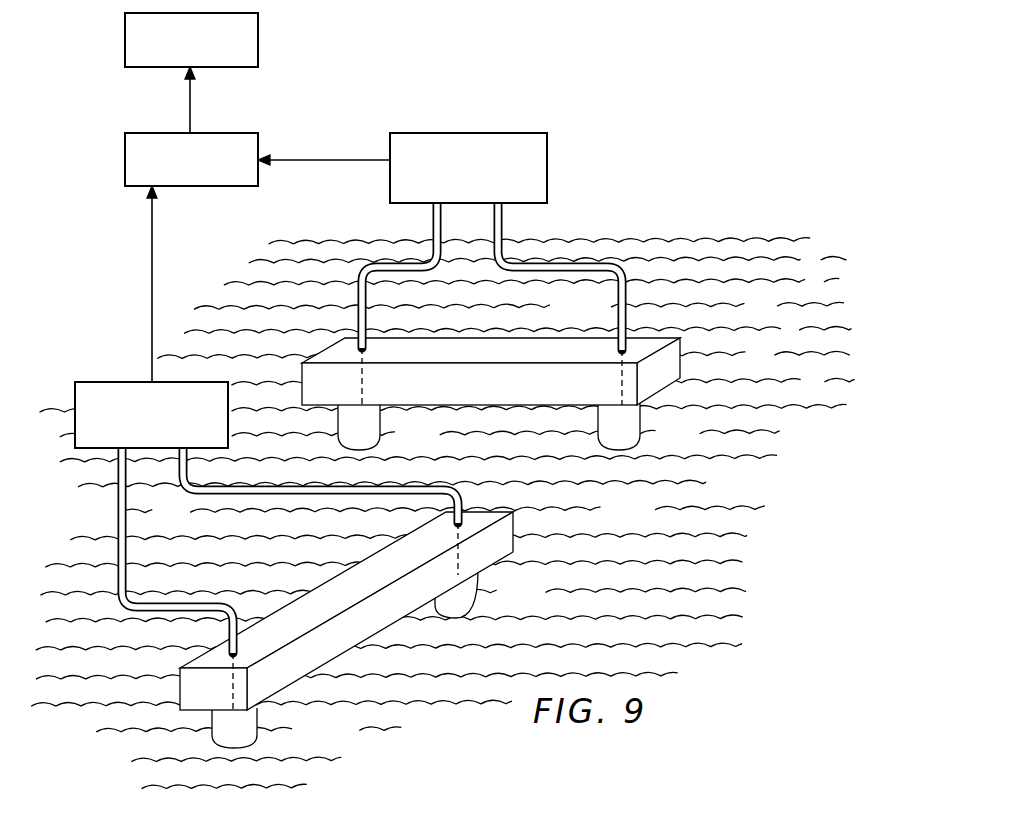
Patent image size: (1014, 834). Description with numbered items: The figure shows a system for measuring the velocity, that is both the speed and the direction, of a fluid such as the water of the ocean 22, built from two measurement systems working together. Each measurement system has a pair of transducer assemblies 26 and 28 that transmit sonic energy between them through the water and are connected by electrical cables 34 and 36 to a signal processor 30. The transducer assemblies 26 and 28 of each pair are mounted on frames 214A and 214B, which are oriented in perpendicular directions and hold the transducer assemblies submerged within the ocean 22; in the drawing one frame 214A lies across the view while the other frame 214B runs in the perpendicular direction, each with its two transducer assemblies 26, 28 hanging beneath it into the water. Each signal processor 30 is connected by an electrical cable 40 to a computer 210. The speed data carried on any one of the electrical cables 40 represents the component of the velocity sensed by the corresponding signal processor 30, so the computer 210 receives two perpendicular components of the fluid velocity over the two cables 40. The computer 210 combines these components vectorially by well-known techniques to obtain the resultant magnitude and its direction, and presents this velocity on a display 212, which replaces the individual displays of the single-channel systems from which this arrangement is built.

The ocean 22 is at (644, 521).
The transducer assembly 26 is at (638, 450).
The transducer assembly 28 is at (378, 450).
The signal processor 30 is at (450, 132).
The electrical cable 34 is at (505, 225).
The electrical cable 36 is at (432, 220).
The electrical cable 40 is at (348, 158).
The computer 210 is at (125, 161).
The display 212 is at (125, 32).
The frame 214A is at (593, 343).
The frame 214B is at (413, 605).